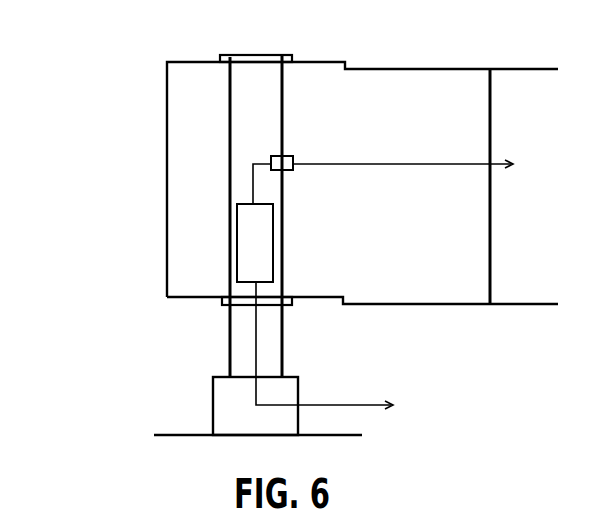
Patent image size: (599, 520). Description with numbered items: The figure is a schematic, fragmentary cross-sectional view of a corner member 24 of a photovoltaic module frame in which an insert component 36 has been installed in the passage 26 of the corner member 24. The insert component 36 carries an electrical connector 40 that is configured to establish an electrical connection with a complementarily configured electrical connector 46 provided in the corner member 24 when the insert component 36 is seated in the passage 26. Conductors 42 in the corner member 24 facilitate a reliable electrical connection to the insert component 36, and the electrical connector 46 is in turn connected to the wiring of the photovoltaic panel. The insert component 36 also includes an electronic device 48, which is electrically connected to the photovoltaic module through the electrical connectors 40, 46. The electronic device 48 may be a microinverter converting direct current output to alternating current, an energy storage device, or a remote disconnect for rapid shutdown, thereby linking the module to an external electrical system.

The corner member 24 is at (159, 61).
The passage 26 is at (236, 176).
The insert component 36 is at (268, 132).
The electrical connector 40 is at (270, 157).
The conductor 42 is at (253, 194).
The electrical connector 46 is at (293, 173).
The electronic device 48 is at (274, 252).